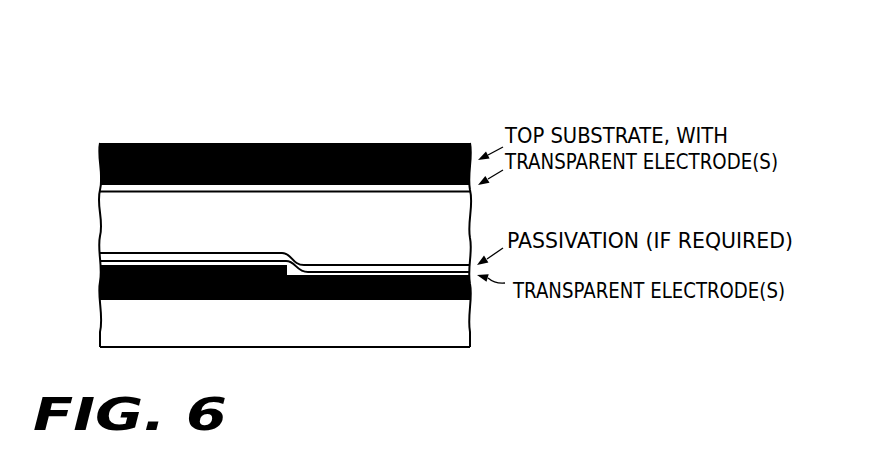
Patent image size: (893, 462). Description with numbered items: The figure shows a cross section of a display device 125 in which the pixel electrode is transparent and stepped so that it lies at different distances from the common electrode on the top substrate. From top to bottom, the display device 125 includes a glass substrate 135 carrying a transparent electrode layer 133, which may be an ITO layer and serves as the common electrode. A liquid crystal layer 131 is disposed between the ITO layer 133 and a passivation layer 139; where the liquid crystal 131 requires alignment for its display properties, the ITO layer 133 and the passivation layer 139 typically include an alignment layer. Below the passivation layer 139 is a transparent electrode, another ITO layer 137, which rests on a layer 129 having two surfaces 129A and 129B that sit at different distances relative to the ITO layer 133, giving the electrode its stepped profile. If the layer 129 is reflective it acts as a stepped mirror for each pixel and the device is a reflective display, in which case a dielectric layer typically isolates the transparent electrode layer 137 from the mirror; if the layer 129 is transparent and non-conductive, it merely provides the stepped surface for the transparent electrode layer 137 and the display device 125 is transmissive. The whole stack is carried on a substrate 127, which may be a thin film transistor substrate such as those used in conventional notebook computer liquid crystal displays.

The display device 125 is at (494, 101).
The substrate 127 is at (100, 322).
The layer 129 is at (100, 285).
The surface 129A is at (155, 268).
The stepped surface 129B is at (427, 276).
The liquid crystal layer 131 is at (100, 212).
The transparent electrode layer 133 is at (100, 188).
The glass substrate 135 is at (100, 162).
The transparent electrode layer 137 is at (100, 260).
The passivation layer 139 is at (100, 250).